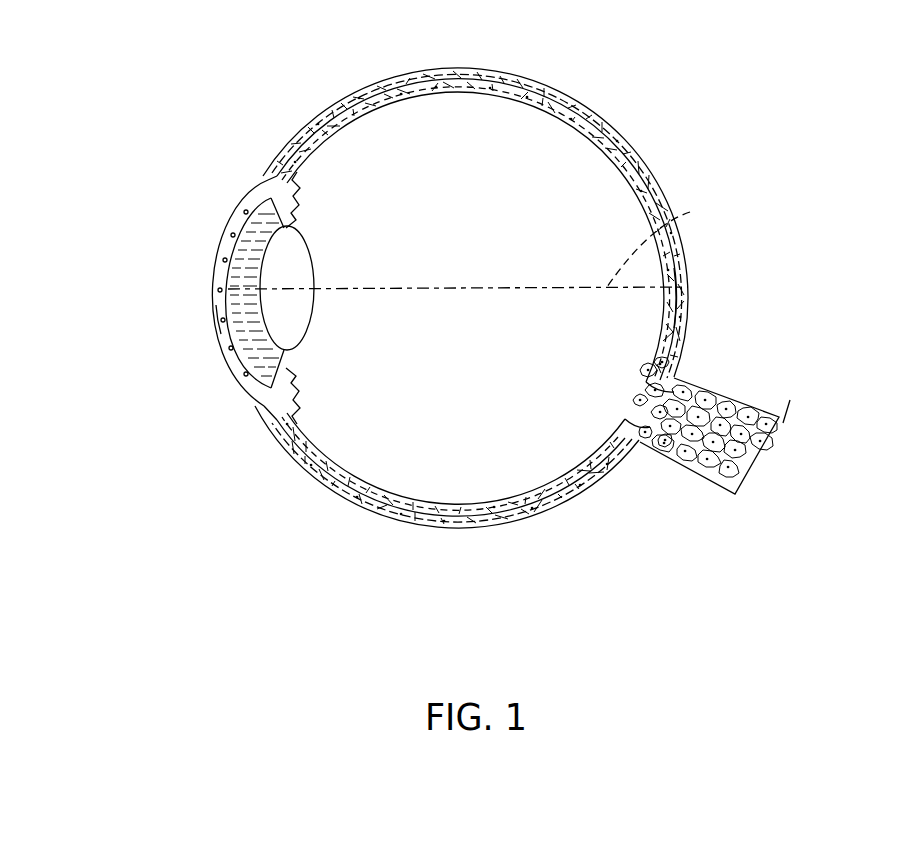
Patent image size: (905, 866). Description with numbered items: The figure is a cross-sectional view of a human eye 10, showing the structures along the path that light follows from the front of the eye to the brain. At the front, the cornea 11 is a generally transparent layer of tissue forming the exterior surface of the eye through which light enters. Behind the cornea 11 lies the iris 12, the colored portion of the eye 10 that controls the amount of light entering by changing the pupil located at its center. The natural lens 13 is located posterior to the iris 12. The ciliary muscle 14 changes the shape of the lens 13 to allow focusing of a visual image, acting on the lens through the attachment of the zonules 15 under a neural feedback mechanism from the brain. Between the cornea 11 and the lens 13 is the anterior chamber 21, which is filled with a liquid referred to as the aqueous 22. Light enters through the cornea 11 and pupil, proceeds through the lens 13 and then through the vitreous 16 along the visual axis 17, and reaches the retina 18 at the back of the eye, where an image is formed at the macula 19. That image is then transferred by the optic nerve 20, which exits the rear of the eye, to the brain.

The eye 10 is at (84, 457).
The cornea 11 is at (223, 255).
The iris 12 is at (258, 205).
The natural lens 13 is at (273, 320).
The ciliary muscle 14 is at (265, 405).
The zonules 15 is at (285, 226).
The vitreous 16 is at (538, 130).
The visual axis 17 is at (690, 212).
The retina 18 is at (650, 158).
The macula 19 is at (687, 276).
The optic nerve 20 is at (753, 473).
The anterior chamber 21 is at (213, 317).
The aqueous 22 is at (210, 277).